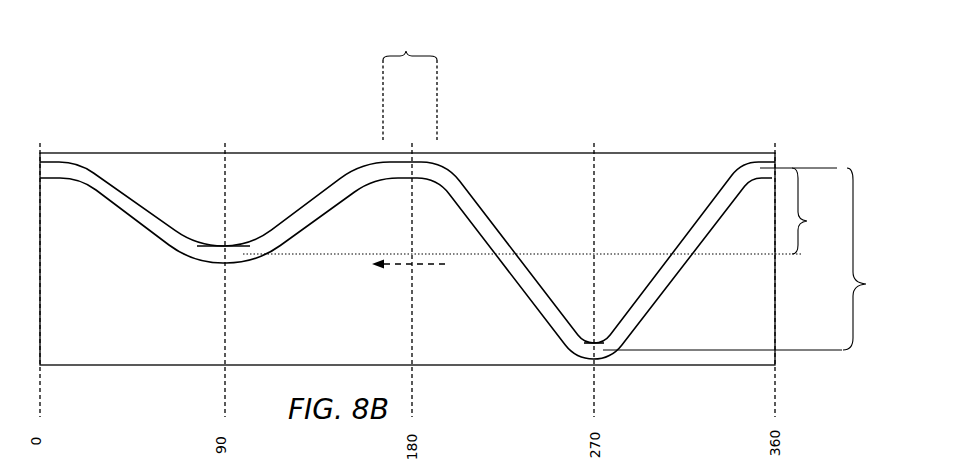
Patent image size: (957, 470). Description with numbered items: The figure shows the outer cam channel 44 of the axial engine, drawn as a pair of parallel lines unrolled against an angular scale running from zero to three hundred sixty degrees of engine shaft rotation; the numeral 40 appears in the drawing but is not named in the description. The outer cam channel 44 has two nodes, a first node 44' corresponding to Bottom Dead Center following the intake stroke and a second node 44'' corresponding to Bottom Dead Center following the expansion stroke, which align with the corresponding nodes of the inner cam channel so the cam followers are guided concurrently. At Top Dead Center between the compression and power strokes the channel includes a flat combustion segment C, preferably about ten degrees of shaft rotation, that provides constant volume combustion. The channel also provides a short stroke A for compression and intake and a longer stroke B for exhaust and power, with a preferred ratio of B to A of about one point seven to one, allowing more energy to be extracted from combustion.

The corrugated wall portion 40 is at (268, 108).
The outer cam channel 44 is at (407, 228).
The node 44' is at (204, 331).
The node 44'' is at (581, 378).
The short stroke A is at (809, 222).
The longer stroke B is at (867, 284).
The flat combustion segment C is at (406, 51).